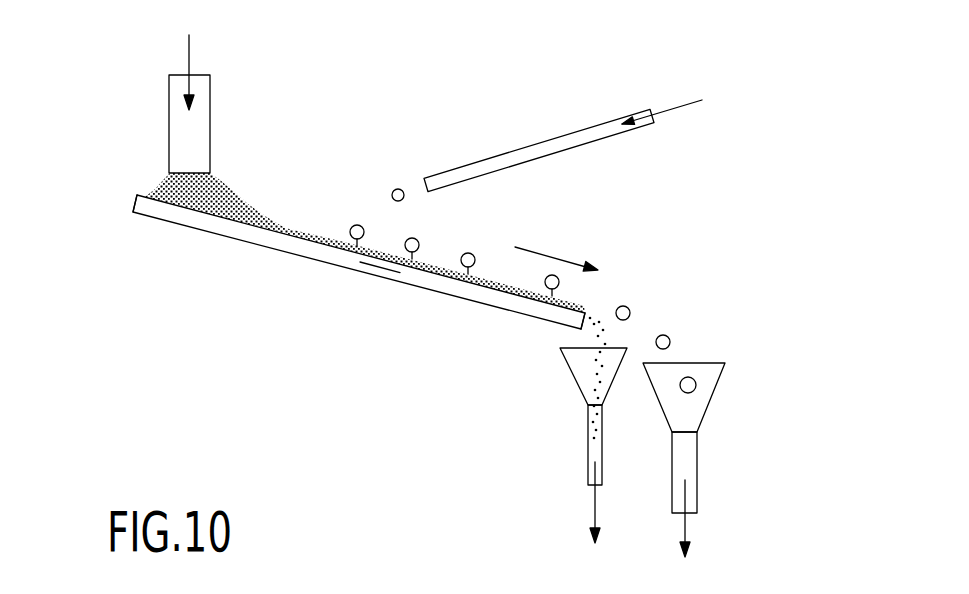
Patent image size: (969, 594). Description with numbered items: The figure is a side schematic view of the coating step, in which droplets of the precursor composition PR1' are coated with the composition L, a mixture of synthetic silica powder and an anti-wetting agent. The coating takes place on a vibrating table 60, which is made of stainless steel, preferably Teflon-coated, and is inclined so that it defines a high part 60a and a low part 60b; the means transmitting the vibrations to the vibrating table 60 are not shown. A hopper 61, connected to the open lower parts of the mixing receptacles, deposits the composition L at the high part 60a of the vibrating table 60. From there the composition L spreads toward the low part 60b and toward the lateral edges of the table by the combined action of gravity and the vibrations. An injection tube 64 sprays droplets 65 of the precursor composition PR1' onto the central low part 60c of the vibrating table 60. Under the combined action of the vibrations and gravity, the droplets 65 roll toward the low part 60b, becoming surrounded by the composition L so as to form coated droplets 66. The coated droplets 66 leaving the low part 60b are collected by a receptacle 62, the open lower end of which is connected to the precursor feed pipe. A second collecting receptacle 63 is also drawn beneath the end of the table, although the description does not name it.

The vibrating table 60 is at (350, 270).
The high part of the vibrating table 60a is at (147, 213).
The low part of the vibrating table 60b is at (570, 320).
The central low part of the vibrating table 60c is at (380, 266).
The hopper 61 is at (182, 137).
The receptacle 62 is at (695, 460).
The collecting funnel for rejected particles 63 is at (588, 440).
The injection tube 64 is at (550, 138).
The droplets 65 is at (398, 189).
The coated droplets 66 is at (669, 337).
The composition L is at (189, 52).
The precursor composition PR1' is at (697, 87).